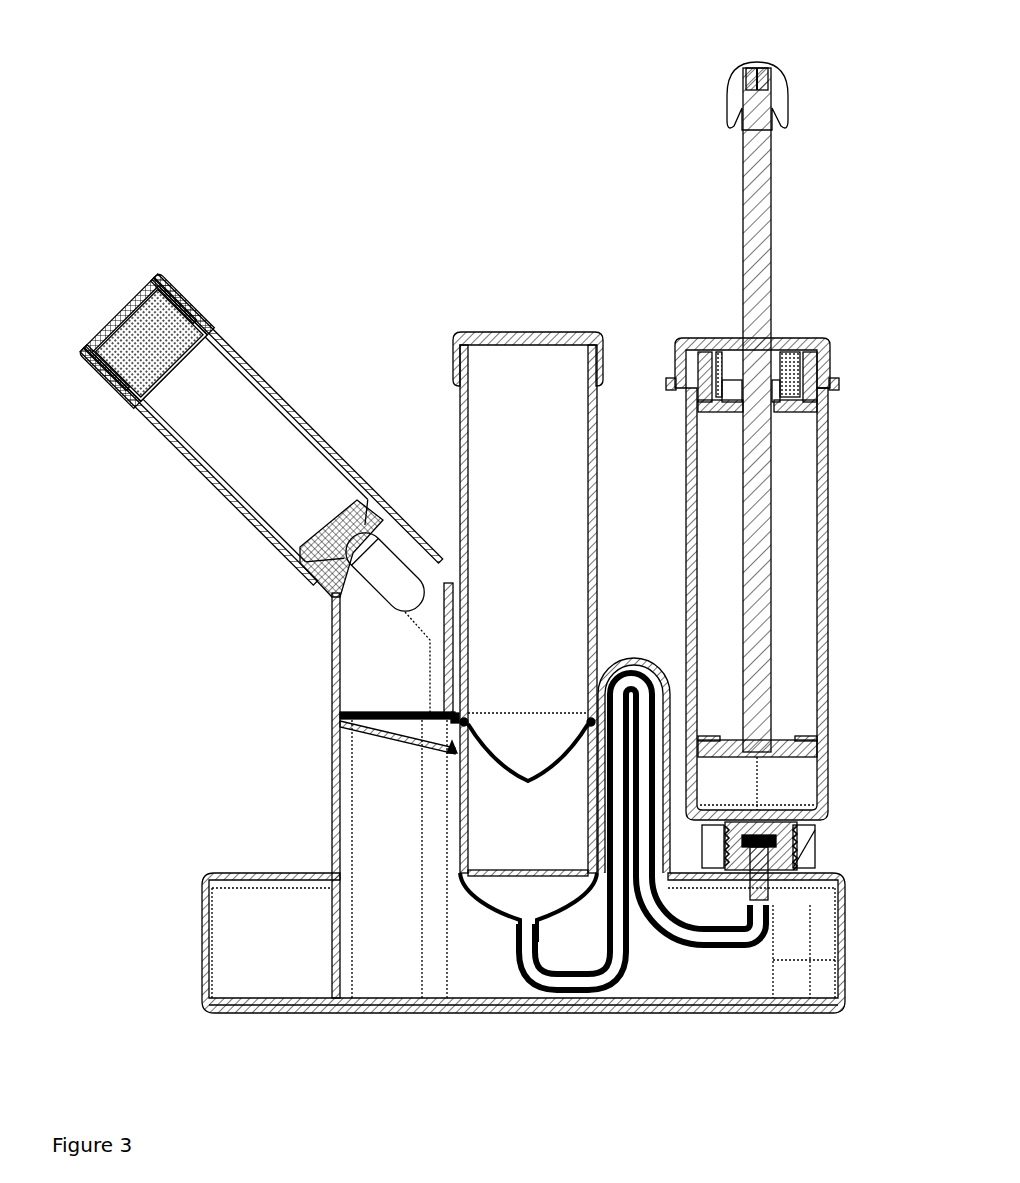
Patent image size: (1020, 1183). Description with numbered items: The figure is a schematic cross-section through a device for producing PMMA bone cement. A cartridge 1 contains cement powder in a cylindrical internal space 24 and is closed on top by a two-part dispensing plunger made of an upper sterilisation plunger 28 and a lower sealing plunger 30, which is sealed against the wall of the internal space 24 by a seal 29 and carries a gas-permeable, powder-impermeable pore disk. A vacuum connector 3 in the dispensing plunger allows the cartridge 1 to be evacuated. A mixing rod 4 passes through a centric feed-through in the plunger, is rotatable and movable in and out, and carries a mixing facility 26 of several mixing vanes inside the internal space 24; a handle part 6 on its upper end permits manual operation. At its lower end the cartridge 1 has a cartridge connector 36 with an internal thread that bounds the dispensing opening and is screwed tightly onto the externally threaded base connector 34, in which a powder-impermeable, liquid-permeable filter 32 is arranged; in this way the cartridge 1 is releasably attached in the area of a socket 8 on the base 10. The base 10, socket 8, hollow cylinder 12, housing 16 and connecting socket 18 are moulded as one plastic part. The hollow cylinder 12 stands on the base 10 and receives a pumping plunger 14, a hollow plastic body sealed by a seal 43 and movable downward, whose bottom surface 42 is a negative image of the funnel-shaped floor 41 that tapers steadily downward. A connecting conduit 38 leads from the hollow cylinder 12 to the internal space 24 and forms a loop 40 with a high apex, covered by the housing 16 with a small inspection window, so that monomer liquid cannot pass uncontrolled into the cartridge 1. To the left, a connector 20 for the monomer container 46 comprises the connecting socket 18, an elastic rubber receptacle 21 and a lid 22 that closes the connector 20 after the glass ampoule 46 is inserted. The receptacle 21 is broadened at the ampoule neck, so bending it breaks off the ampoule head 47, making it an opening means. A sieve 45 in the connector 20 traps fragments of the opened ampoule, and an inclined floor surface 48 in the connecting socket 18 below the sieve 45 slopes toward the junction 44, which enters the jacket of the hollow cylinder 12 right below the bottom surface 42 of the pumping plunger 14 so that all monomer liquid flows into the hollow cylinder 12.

The cartridge 1 is at (690, 540).
The vacuum connector 3 is at (713, 343).
The mixing rod 4 is at (757, 228).
The handle part 6 is at (770, 70).
The socket 8 is at (805, 855).
The base 10 is at (205, 918).
The hollow cylinder 12 is at (548, 982).
The pumping plunger 14 is at (590, 617).
The housing 16 is at (633, 662).
The connecting socket 18 is at (332, 760).
The connector 20 is at (220, 228).
The elastic receptacle 21 is at (330, 580).
The lid 22 is at (147, 335).
The internal space 24 is at (757, 673).
The mixing facility 26 is at (713, 748).
The sterilisation plunger 28 is at (693, 340).
The seal 29 is at (809, 345).
The sealing plunger 30 is at (788, 340).
The filter 32 is at (750, 840).
The base connector 34 is at (772, 850).
The cartridge connector 36 is at (785, 855).
The connecting conduit 38 is at (596, 845).
The loop 40 is at (618, 665).
The funnel-shaped floor 41 is at (503, 907).
The bottom surface 42 is at (503, 755).
The seal 43 is at (455, 718).
The junction 44 is at (440, 745).
The sieve 45 is at (387, 720).
The monomer container 46 is at (288, 463).
The ampoule head 47 is at (386, 585).
The inclined floor surface 48 is at (452, 745).